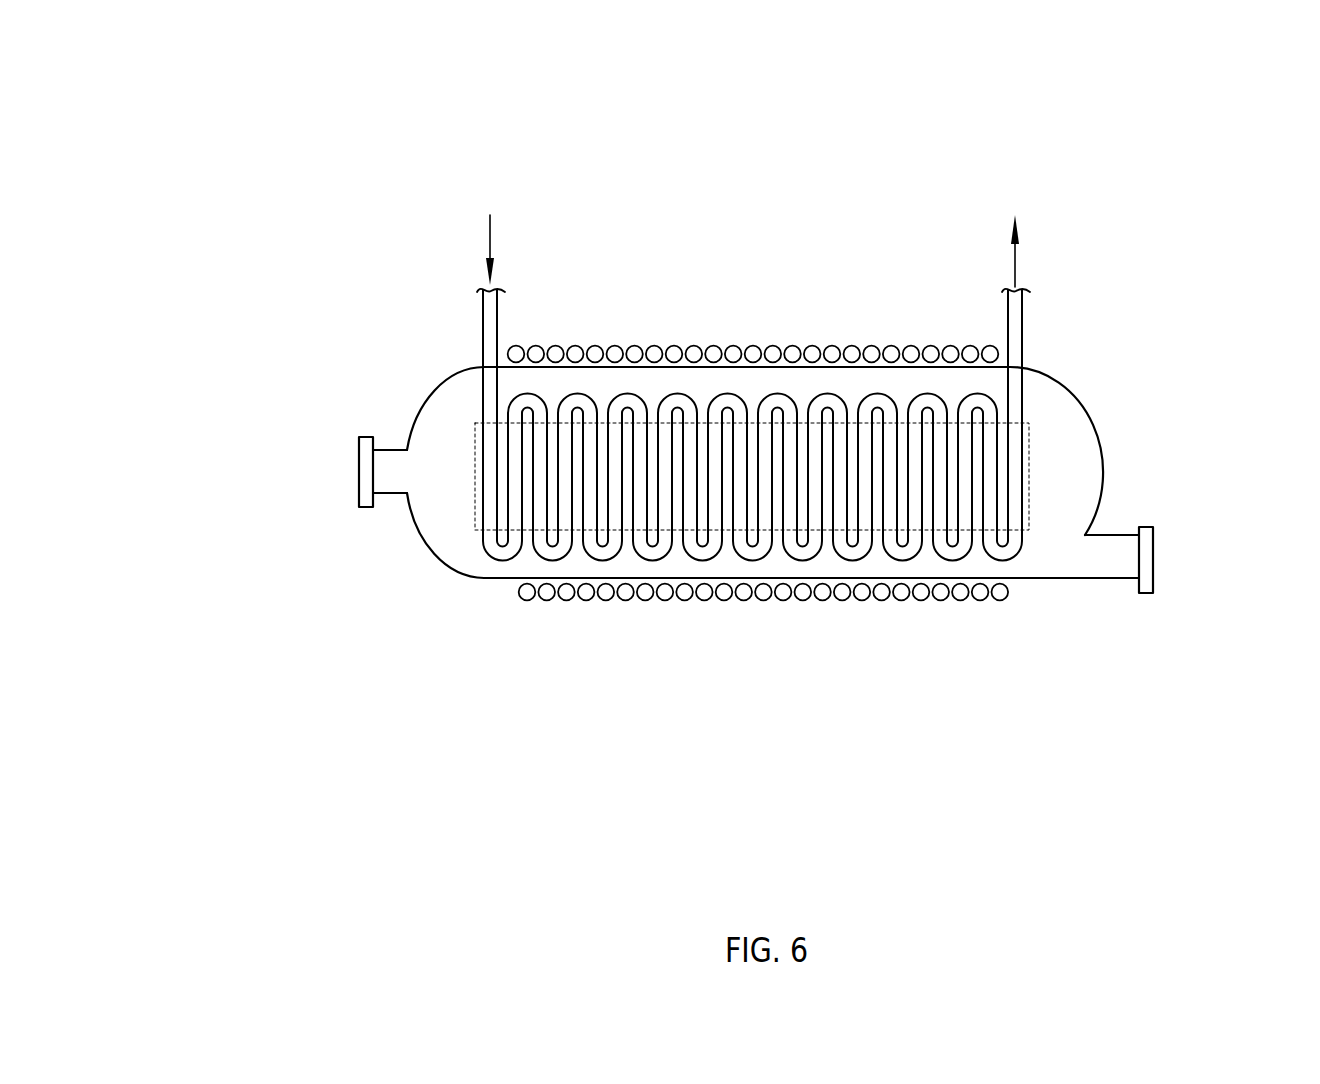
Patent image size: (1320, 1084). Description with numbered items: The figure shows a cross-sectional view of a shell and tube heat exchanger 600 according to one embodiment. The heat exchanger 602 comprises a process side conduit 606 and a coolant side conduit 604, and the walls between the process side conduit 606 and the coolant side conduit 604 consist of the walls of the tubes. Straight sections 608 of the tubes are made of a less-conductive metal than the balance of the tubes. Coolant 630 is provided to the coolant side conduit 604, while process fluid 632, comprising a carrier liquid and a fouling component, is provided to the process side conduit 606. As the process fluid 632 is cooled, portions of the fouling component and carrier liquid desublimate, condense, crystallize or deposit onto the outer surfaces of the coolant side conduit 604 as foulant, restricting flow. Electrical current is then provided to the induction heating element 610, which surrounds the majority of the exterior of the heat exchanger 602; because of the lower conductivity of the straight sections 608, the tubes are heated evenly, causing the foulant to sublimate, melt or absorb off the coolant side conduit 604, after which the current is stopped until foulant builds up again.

The cross-sectional view of a shell and tube heat exchanger 600 is at (214, 88).
The heat exchanger 602 is at (422, 530).
The coolant side conduit 604 is at (484, 335).
The process side conduit 606 is at (1070, 427).
The straight sections 608 is at (475, 438).
The induction heating element 610 is at (772, 348).
The coolant 630 is at (753, 236).
The process fluid 632 is at (330, 472).